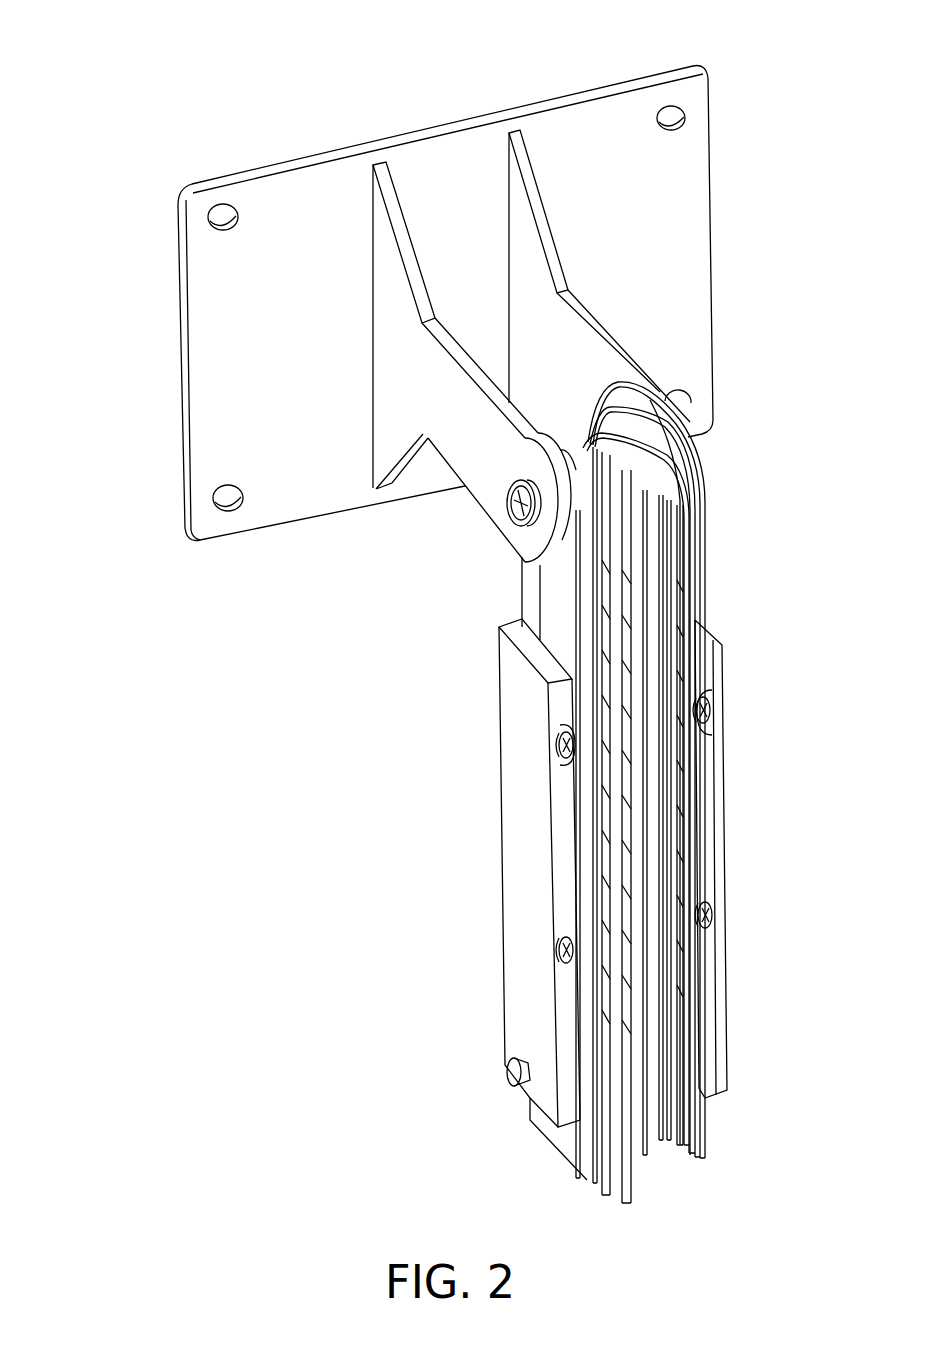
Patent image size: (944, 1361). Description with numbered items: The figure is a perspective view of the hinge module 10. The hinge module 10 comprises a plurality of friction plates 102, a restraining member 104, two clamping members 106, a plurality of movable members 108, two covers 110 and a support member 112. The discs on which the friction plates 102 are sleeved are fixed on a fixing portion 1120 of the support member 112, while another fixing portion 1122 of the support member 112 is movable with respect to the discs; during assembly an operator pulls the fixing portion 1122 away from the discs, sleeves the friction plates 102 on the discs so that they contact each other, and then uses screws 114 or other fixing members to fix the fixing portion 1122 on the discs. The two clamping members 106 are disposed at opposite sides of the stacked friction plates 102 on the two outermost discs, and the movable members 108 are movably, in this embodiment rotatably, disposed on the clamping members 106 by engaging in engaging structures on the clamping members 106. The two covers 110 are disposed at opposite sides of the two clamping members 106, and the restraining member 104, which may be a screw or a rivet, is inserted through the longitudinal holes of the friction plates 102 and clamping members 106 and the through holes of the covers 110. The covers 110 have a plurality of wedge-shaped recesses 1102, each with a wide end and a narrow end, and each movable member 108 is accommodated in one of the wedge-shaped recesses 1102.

The hinge module 10 is at (196, 66).
The support member 112 is at (632, 85).
The fixing portion 1120 is at (610, 333).
The fixing portion 1122 is at (452, 458).
The screws 114 is at (520, 503).
The clamping members 106 is at (546, 613).
The movable members 108 is at (560, 738).
The wedge-shaped recesses 1102 is at (552, 758).
The covers 110 is at (525, 876).
The restraining member 104 is at (508, 1070).
The friction plates 102 is at (624, 1201).